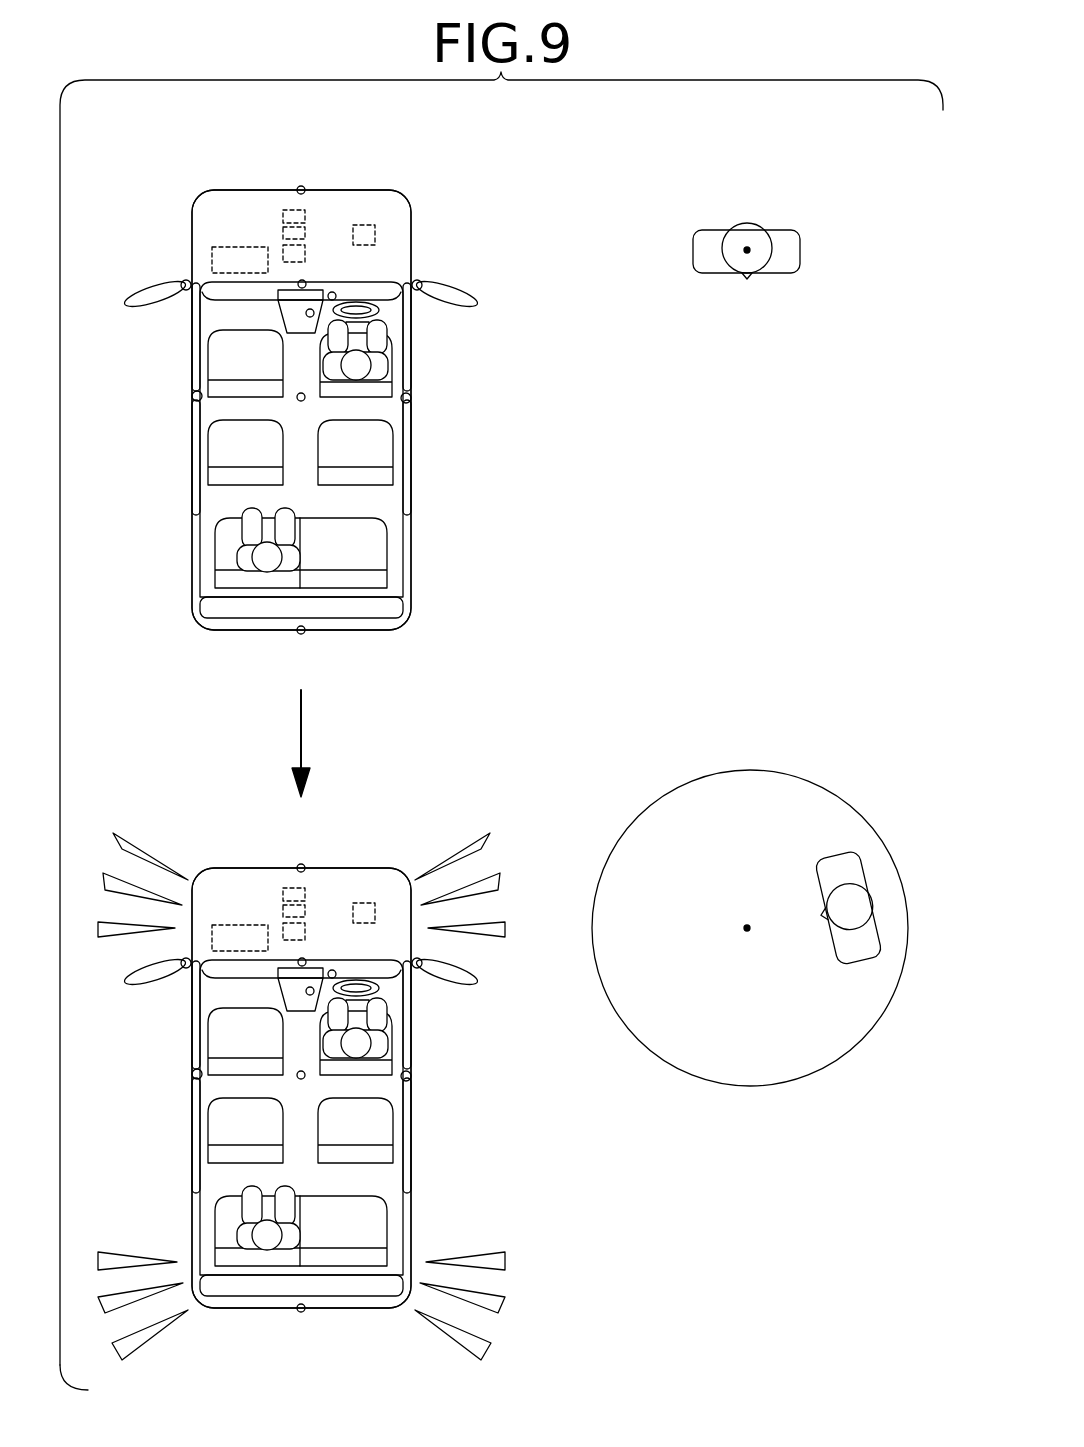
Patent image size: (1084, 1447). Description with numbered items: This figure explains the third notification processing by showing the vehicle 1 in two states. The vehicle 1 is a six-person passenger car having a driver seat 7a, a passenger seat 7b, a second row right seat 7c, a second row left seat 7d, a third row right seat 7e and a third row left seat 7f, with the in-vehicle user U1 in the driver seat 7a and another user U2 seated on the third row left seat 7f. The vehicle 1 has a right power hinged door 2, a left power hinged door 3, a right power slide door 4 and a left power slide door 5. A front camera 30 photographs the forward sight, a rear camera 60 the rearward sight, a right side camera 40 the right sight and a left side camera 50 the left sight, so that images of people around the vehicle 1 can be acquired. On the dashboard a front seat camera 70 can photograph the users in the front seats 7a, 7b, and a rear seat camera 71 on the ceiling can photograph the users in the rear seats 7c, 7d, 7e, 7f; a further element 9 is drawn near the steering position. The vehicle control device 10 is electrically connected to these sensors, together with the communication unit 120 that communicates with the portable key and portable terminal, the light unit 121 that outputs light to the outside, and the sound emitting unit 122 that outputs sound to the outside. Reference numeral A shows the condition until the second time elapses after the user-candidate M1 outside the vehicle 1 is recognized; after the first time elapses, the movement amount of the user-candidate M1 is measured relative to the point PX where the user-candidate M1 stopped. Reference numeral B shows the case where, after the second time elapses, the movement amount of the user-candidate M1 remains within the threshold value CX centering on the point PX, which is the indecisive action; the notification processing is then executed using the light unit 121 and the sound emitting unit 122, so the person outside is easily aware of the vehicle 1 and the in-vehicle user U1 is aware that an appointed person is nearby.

The vehicle 1 is at (355, 190).
The right power hinged door 2 is at (411, 336).
The left power hinged door 3 is at (192, 336).
The right power slide door 4 is at (411, 466).
The left power slide door 5 is at (192, 466).
The steering sensor 9 is at (306, 661).
The vehicle control device 10 is at (246, 247).
The front camera 30 is at (302, 186).
The right side camera 40 is at (409, 403).
The left side camera 50 is at (194, 401).
The rear camera 60 is at (302, 634).
The front seat camera 70 is at (304, 281).
The rear seat camera 71 is at (302, 402).
The driver seat 7a is at (320, 338).
The passenger seat 7b is at (233, 332).
The second row right seat 7c is at (316, 464).
The second row left seat 7d is at (233, 421).
The third row right seat 7e is at (340, 518).
The third row left seat 7f is at (222, 521).
The communication unit 120 is at (357, 229).
The light unit 121 is at (296, 216).
The sound emitting unit 122 is at (298, 246).
The user U1 is at (357, 386).
The user U2 is at (237, 558).
The user-candidate M1 is at (778, 228).
The point PX is at (749, 253).
The threshold value CX is at (757, 770).
The condition A is at (206, 164).
The case B is at (206, 842).